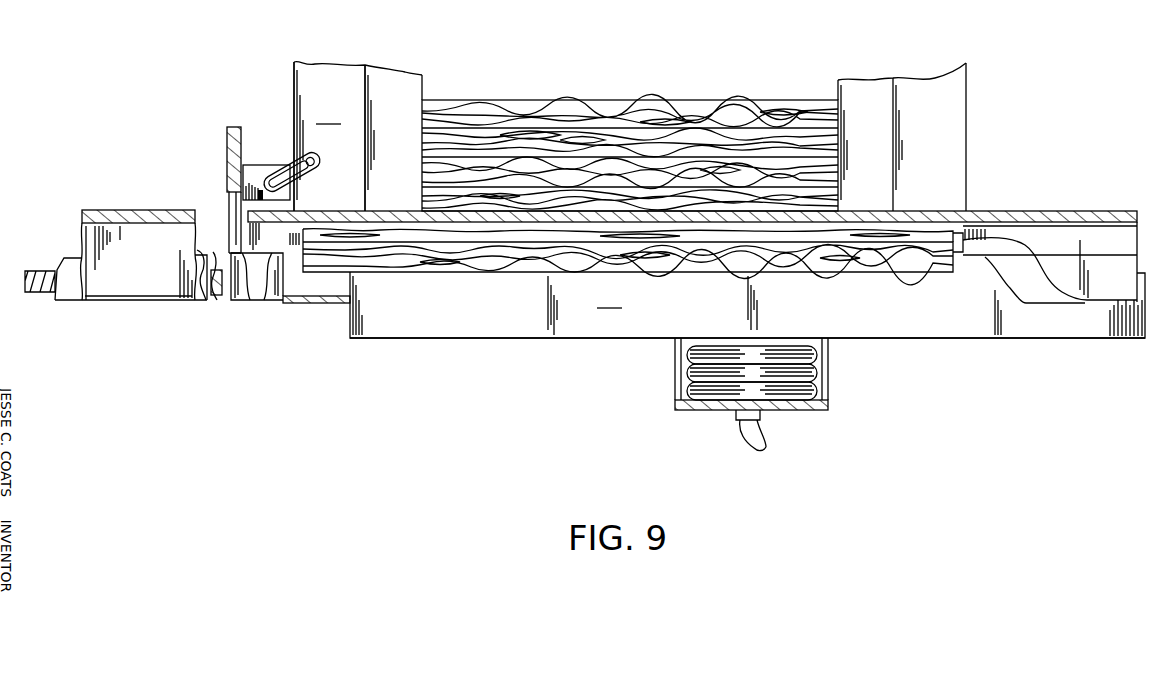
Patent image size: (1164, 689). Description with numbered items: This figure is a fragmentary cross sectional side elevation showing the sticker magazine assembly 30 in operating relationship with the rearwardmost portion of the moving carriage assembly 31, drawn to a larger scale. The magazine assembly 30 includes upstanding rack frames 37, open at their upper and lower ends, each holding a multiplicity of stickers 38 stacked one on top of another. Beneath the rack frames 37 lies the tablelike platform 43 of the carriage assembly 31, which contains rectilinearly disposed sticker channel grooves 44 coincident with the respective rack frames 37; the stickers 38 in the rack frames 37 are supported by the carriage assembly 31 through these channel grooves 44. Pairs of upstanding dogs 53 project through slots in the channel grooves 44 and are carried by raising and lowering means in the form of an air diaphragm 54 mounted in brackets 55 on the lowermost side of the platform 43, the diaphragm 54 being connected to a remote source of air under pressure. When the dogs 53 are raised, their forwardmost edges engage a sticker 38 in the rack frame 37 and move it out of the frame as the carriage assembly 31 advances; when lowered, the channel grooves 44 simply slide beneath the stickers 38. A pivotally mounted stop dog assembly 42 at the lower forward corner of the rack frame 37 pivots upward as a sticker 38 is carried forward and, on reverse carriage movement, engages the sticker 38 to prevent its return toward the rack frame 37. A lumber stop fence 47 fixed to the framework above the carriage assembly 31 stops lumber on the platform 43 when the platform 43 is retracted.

The sticker magazine assembly 30 is at (329, 136).
The moving carriage assembly 31 is at (747, 305).
The rack frames 37 is at (294, 89).
The stickers 38 is at (543, 103).
The stop dog assembly 42 is at (186, 300).
The tablelike platform 43 is at (1040, 211).
The sticker channel grooves 44 is at (247, 300).
The lumber stop fence 47 is at (230, 190).
The upstanding dogs 53 is at (500, 335).
The air diaphragm 54 is at (682, 372).
The brackets 55 is at (705, 403).